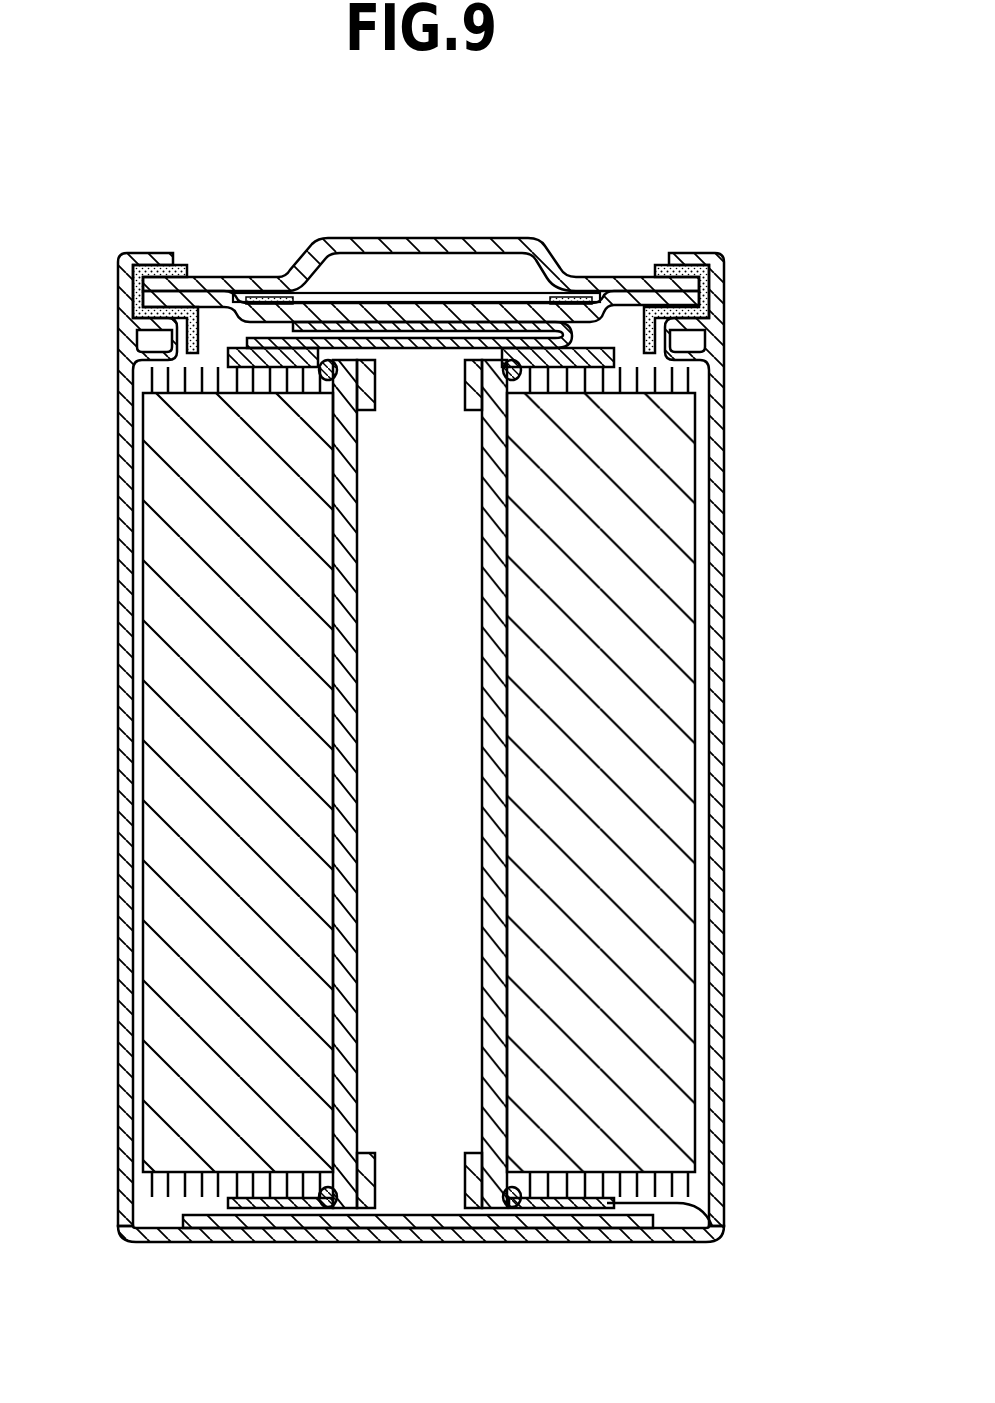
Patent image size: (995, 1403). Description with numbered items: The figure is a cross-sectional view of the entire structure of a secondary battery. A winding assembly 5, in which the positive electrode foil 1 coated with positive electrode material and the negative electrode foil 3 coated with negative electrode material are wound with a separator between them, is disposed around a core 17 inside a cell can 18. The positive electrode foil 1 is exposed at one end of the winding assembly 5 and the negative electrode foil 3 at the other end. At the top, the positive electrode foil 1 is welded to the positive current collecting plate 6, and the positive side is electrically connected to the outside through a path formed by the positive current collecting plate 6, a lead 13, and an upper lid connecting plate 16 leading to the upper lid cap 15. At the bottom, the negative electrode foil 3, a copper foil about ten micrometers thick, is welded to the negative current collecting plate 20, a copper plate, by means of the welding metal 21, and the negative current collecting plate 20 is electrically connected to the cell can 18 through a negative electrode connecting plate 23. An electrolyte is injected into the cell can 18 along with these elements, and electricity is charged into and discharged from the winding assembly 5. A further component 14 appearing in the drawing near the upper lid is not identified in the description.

The positive electrode foil 1 is at (432, 784).
The negative electrode foil 3 is at (150, 1184).
The winding assembly 5 is at (672, 530).
The positive current collecting plate 6 is at (614, 357).
The lead 13 is at (400, 342).
The PTC element 14 is at (447, 293).
The upper lid cap 15 is at (549, 268).
The upper lid connecting plate 16 is at (330, 312).
The core 17 is at (492, 698).
The cell can 18 is at (718, 866).
The negative current collecting plate 20 is at (712, 1226).
The welding metal 21 is at (328, 1208).
The negative electrode connecting plate 23 is at (418, 1222).